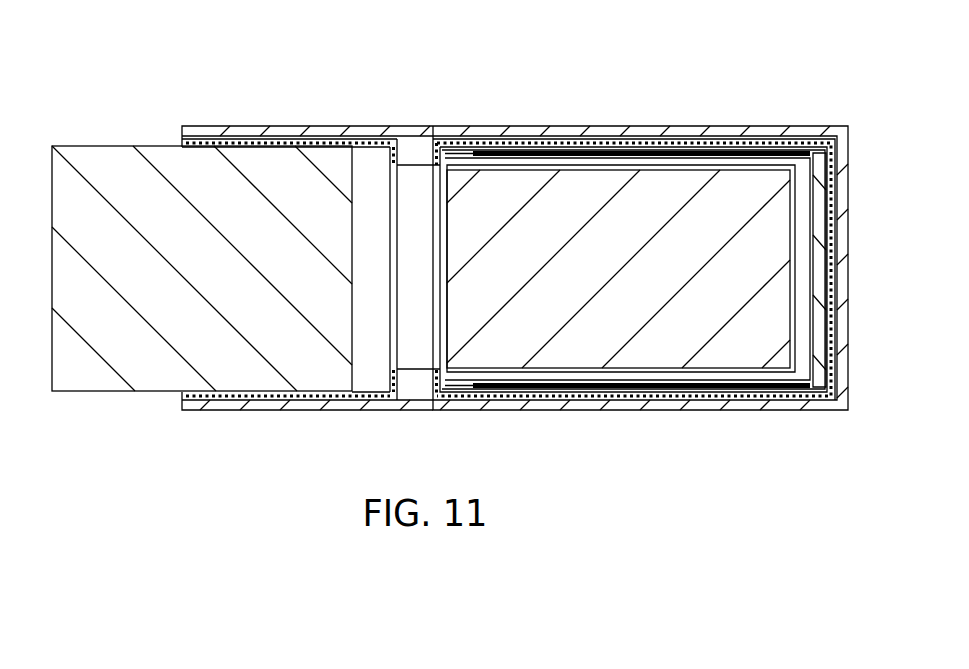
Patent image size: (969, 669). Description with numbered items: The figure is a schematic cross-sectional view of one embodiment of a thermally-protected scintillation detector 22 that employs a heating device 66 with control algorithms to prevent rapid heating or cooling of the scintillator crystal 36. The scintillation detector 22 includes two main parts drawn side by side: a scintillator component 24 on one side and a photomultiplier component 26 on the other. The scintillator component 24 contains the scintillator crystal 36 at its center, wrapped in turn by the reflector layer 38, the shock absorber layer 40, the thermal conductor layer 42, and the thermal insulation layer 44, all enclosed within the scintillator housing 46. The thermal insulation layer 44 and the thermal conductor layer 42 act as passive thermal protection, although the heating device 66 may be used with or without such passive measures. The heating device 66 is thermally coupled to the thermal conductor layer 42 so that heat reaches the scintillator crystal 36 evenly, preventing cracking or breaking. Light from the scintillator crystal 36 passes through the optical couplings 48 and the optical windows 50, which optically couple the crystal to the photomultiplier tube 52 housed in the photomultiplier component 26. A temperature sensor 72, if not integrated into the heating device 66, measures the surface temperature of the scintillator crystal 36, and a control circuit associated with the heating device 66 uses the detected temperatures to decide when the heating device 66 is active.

The scintillation detector 22 is at (151, 425).
The scintillator component 24 is at (821, 413).
The photomultiplier component 26 is at (72, 141).
The photomultiplier tube 52 is at (110, 160).
The optical window 50 is at (418, 180).
The optical coupling 48 is at (428, 407).
The scintillator housing 46 is at (800, 130).
The thermal insulation layer 44 is at (718, 142).
The shock absorber layer 40 is at (520, 145).
The thermal conductor layer 42 is at (595, 150).
The heating device 66 is at (653, 152).
The reflector layer 38 is at (727, 372).
The temperature sensor 72 is at (487, 372).
The scintillator crystal 36 is at (560, 355).